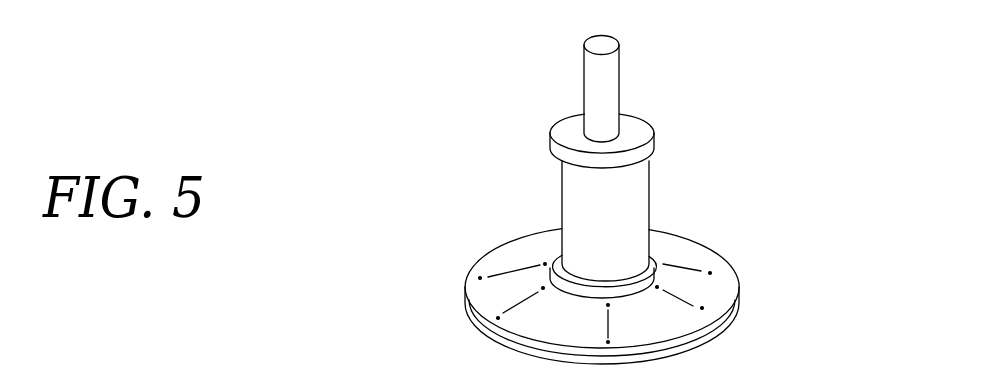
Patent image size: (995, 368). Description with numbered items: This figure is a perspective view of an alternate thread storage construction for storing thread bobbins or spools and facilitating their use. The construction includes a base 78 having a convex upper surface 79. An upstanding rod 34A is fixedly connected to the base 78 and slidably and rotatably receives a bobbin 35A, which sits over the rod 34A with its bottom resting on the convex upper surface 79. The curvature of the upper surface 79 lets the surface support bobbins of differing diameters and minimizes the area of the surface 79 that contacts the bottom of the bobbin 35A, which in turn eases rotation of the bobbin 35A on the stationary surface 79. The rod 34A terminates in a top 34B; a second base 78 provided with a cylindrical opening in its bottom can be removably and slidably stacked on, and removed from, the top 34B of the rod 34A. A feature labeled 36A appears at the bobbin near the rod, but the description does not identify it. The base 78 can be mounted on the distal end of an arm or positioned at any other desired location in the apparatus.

The upstanding rod 34A is at (620, 88).
The top of rod 34B is at (602, 42).
The bobbin 35A is at (662, 173).
The slot 36A is at (583, 142).
The base 78 is at (765, 295).
The convex upper surface 79 is at (718, 283).